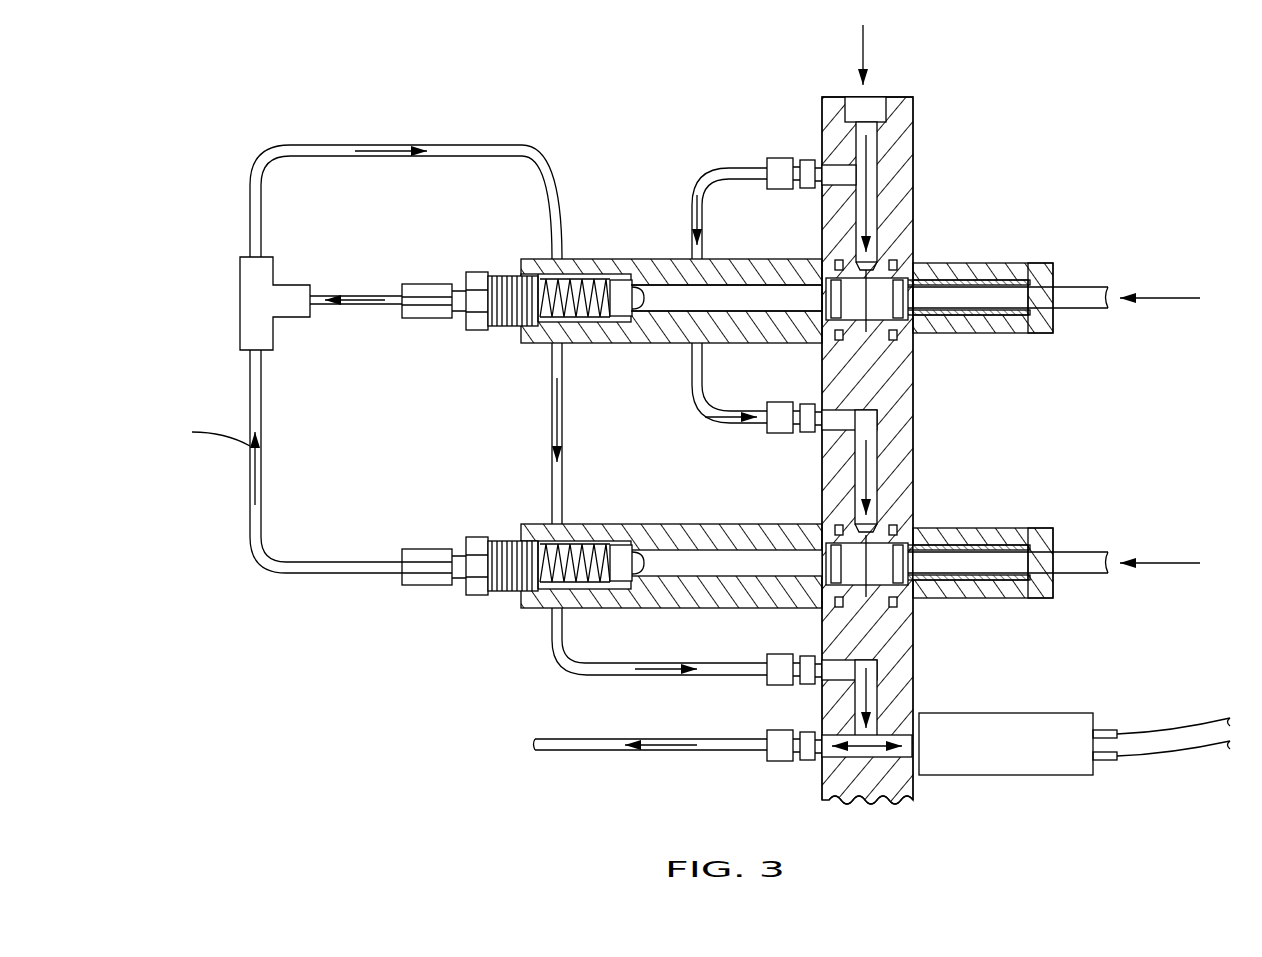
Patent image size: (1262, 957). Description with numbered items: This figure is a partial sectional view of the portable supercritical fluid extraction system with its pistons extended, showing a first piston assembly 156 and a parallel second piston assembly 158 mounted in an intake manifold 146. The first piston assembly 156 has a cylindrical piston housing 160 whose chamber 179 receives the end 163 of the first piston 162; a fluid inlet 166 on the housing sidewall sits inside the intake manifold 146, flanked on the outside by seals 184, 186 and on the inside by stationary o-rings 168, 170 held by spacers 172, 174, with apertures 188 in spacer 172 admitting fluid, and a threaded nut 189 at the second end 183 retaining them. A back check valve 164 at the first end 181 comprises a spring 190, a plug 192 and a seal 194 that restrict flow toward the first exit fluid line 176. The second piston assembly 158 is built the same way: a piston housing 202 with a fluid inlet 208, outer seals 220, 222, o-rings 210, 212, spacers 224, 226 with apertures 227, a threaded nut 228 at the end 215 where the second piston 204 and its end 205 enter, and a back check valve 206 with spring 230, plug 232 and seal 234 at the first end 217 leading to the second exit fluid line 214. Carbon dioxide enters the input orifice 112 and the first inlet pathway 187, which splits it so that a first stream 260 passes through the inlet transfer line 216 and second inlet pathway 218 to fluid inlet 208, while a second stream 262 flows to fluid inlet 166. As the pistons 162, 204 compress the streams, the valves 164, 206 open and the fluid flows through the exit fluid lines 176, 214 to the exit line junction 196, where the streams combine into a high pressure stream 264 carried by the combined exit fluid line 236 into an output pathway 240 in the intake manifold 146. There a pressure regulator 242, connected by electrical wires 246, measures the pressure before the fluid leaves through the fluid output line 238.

The input orifice 112 is at (876, 107).
The intake manifold 146 is at (895, 135).
The first piston assembly 156 is at (1012, 250).
The second piston assembly 158 is at (1012, 522).
The cylindrical piston housing 160 is at (612, 258).
The first piston 162 is at (1082, 294).
The end of first piston 163 is at (656, 258).
The back check valve 164 is at (497, 270).
The fluid inlet 166 is at (900, 277).
The o-ring 168 is at (786, 270).
The o-ring 170 is at (903, 290).
The spacer 172 is at (900, 340).
The spacer 174 is at (1015, 333).
The first exit fluid line 176 is at (348, 305).
The chamber 179 is at (738, 343).
The first end of piston housing 181 is at (541, 258).
The second end of piston housing 183 is at (1032, 262).
The seal 184 is at (838, 258).
The seal 186 is at (893, 258).
The first inlet pathway 187 is at (855, 110).
The apertures 188 is at (808, 343).
The threaded nut 189 is at (1056, 314).
The spring 190 is at (545, 340).
The plug 192 is at (615, 330).
The seal 194 is at (660, 343).
The exit line junction 196 is at (252, 300).
The cylindrical piston housing 202 is at (673, 524).
The second piston 204 is at (1085, 556).
The end of second piston 205 is at (655, 578).
The back check valve 206 is at (497, 535).
The fluid inlet 208 is at (900, 542).
The o-ring 210 is at (786, 524).
The o-ring 212 is at (905, 552).
The second exit fluid line 214 is at (325, 575).
The end of piston housing 215 is at (1045, 600).
The inlet transfer line 216 is at (705, 170).
The first end of piston housing 217 is at (540, 524).
The second inlet pathway 218 is at (838, 446).
The seal 220 is at (830, 512).
The seal 222 is at (893, 524).
The spacer 224 is at (900, 600).
The spacer 226 is at (960, 600).
The apertures 227 is at (832, 568).
The threaded nut 228 is at (1100, 590).
The spring 230 is at (558, 590).
The plug 232 is at (605, 524).
The seal 234 is at (650, 524).
The combined exit fluid line 236 is at (345, 145).
The fluid output line 238 is at (623, 752).
The output pathway 240 is at (870, 708).
The pressure regulator 242 is at (1035, 755).
The electrical wires 246 is at (1185, 770).
The first CO2 stream 260 is at (366, 298).
The second CO2 stream 262 is at (690, 202).
The high pressure CO2 stream 264 is at (393, 144).